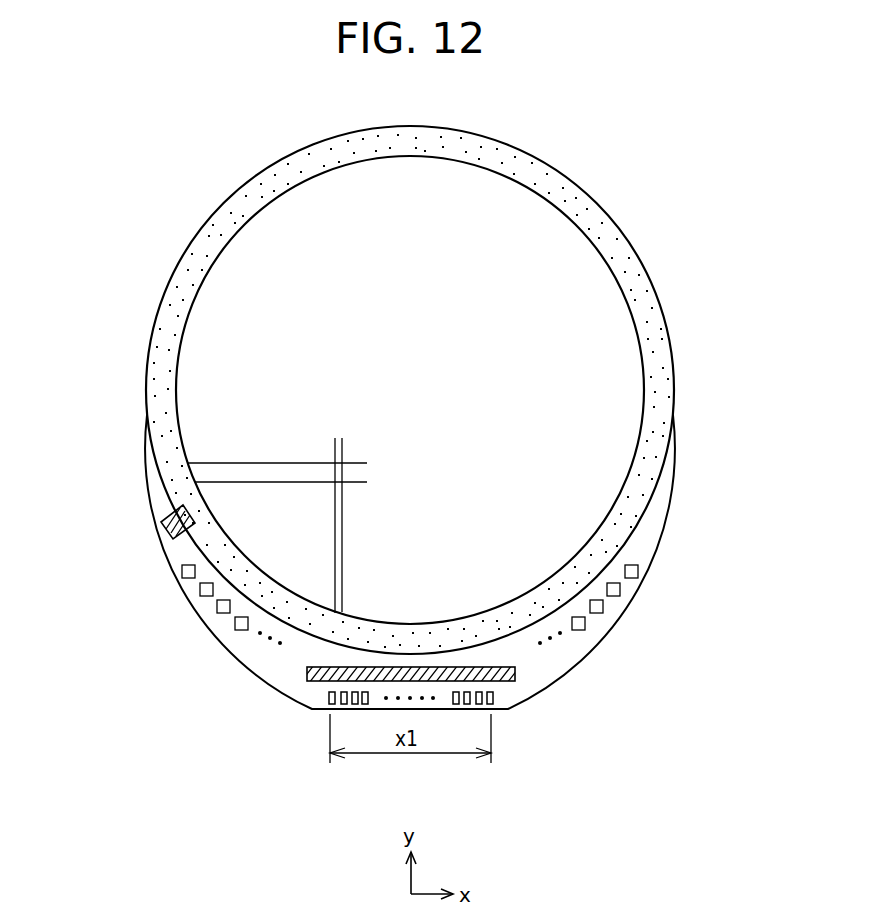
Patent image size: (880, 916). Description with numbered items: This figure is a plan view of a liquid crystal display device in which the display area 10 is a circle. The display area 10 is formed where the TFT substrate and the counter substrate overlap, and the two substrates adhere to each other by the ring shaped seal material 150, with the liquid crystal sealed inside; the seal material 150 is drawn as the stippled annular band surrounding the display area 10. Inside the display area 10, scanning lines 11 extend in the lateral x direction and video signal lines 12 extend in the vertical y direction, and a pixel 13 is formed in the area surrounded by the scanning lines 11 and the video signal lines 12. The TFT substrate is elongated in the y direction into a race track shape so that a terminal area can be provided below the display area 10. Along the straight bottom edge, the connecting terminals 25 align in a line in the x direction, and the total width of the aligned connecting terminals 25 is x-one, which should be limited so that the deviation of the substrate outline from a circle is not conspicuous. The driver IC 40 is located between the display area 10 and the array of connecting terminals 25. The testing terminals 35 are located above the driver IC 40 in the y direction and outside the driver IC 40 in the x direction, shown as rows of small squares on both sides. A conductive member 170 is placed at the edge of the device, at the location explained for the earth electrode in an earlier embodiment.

The display area 10 is at (537, 255).
The seal material 150 is at (648, 312).
The scanning lines 11 is at (281, 463).
The video signal lines 12 is at (342, 527).
The pixel 13 is at (337, 472).
The conductive member 170 is at (170, 536).
The testing terminals 35 is at (199, 589).
The driver IC 40 is at (307, 673).
The connecting terminals 25 is at (328, 697).